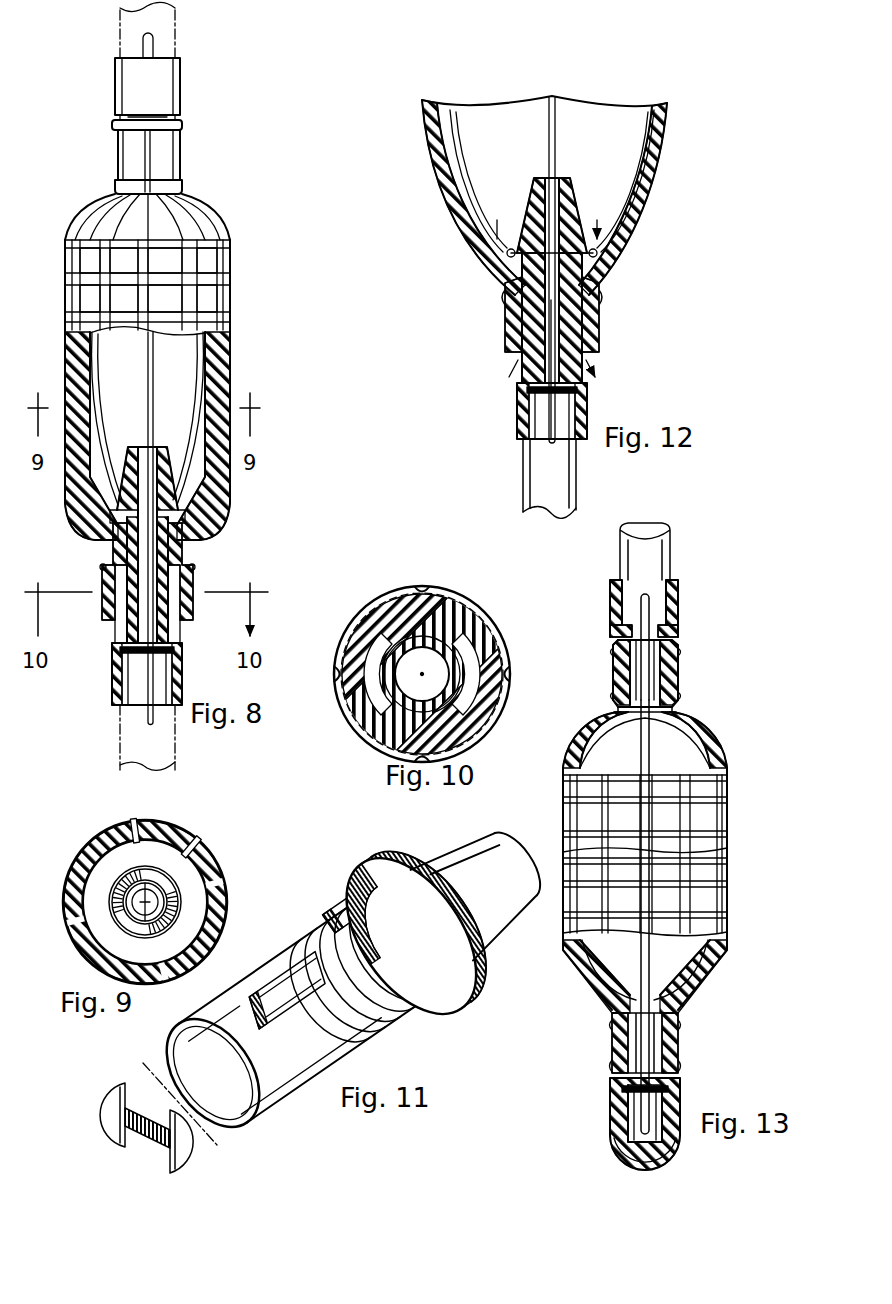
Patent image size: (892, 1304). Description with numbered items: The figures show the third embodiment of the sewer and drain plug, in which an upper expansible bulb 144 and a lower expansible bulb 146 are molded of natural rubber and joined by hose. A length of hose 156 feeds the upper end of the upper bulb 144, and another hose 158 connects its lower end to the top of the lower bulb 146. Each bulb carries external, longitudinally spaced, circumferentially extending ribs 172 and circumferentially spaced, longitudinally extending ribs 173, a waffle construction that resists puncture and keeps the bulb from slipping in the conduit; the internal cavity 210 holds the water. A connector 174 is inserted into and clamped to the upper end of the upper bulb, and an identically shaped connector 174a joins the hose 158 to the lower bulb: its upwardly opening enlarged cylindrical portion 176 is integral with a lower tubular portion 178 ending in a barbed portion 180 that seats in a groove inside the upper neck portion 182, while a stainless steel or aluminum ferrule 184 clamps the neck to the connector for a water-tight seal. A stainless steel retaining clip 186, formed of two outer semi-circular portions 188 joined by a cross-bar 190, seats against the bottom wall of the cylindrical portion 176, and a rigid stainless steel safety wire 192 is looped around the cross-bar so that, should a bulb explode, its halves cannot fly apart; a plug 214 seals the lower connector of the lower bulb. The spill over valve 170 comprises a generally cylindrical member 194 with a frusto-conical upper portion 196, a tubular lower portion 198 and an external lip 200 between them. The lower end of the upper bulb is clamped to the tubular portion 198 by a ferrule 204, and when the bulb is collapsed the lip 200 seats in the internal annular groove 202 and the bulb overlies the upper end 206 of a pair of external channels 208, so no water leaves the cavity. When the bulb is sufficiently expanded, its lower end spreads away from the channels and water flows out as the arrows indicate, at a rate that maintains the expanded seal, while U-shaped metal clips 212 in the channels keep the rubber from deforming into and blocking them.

In FIG. 8, the upper expansible bulb 144 is at (220, 211).
In FIG. 9, the upper expansible bulb 144 is at (136, 888).
In FIG. 13, the lower expansible bulb 146 is at (716, 741).
In FIG. 8, the hose 156 is at (178, 44).
In FIG. 8, the hose 158 is at (120, 745).
In FIG. 12, the hose 158 is at (527, 445).
In FIG. 13, the hose 158 is at (672, 550).
In FIG. 8, the spill over valve 170 is at (112, 681).
In FIG. 12, the spill over valve 170 is at (592, 402).
In FIG. 11, the spill over valve 170 is at (350, 874).
In FIG. 8, the circumferentially extending ribs 172 is at (226, 284).
In FIG. 12, the circumferentially extending ribs 172 is at (650, 165).
In FIG. 8, the longitudinally extending ribs 173 is at (106, 298).
In FIG. 9, the longitudinally extending ribs 173 is at (176, 822).
In FIG. 8, the connector 174 is at (180, 92).
In FIG. 13, the connector 174 is at (684, 1086).
In FIG. 13, the connector 174a is at (682, 630).
In FIG. 13, the enlarged cylindrical portion 176 is at (680, 592).
In FIG. 13, the lower tubular portion 178 is at (682, 672).
In FIG. 13, the barbed portion 180 is at (622, 709).
In FIG. 13, the upper neck portion 182 is at (622, 668).
In FIG. 8, the ferrule 184 is at (180, 152).
In FIG. 13, the ferrule 184 is at (620, 688).
In FIG. 9, the retaining clip 186 is at (198, 893).
In FIG. 11, the retaining clip 186 is at (155, 1124).
In FIG. 13, the retaining clip 186 is at (640, 604).
In FIG. 11, the outer semi-circular portions 188 is at (108, 1132).
In FIG. 11, the cross-bar 190 is at (147, 1144).
In FIG. 8, the safety wire 192 is at (157, 378).
In FIG. 12, the safety wire 192 is at (557, 440).
In FIG. 13, the safety wire 192 is at (650, 962).
In FIG. 10, the cylindrical member 194 is at (422, 653).
In FIG. 11, the cylindrical member 194 is at (393, 1032).
In FIG. 12, the frusto-conical upper portion 196 is at (560, 205).
In FIG. 9, the frusto-conical upper portion 196 is at (188, 877).
In FIG. 11, the frusto-conical upper portion 196 is at (462, 862).
In FIG. 8, the tubular lower portion 198 is at (176, 668).
In FIG. 12, the tubular lower portion 198 is at (520, 400).
In FIG. 11, the tubular lower portion 198 is at (296, 1080).
In FIG. 12, the lip 200 is at (497, 220).
In FIG. 11, the lip 200 is at (470, 985).
In FIG. 12, the internal annular groove 202 is at (598, 255).
In FIG. 8, the ferrule 204 is at (190, 580).
In FIG. 10, the ferrule 204 is at (420, 662).
In FIG. 8, the upper end of channels 206 is at (120, 543).
In FIG. 12, the upper end of channels 206 is at (523, 288).
In FIG. 11, the upper end of channels 206 is at (400, 892).
In FIG. 12, the external channels 208 is at (583, 355).
In FIG. 10, the external channels 208 is at (350, 655).
In FIG. 11, the external channels 208 is at (292, 976).
In FIG. 8, the internal cavity 210 is at (182, 358).
In FIG. 12, the internal cavity 210 is at (520, 100).
In FIG. 9, the internal cavity 210 is at (113, 926).
In FIG. 12, the U-shaped metal clips 212 is at (600, 322).
In FIG. 10, the U-shaped metal clips 212 is at (392, 677).
In FIG. 11, the U-shaped metal clips 212 is at (330, 942).
In FIG. 13, the plug 214 is at (615, 1152).